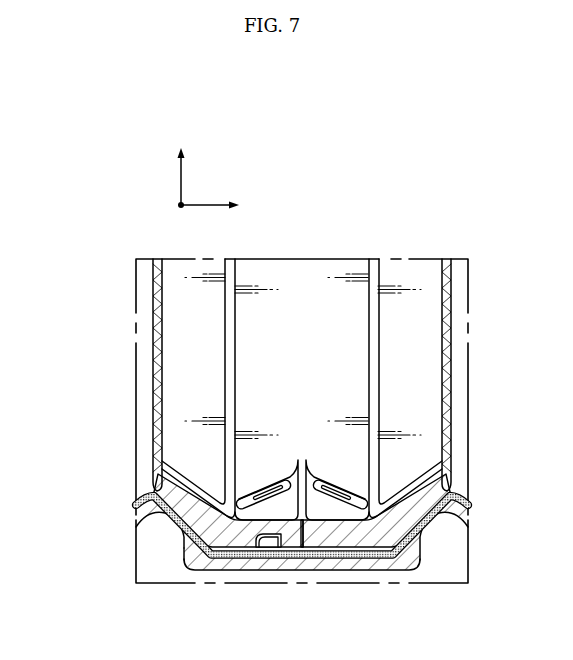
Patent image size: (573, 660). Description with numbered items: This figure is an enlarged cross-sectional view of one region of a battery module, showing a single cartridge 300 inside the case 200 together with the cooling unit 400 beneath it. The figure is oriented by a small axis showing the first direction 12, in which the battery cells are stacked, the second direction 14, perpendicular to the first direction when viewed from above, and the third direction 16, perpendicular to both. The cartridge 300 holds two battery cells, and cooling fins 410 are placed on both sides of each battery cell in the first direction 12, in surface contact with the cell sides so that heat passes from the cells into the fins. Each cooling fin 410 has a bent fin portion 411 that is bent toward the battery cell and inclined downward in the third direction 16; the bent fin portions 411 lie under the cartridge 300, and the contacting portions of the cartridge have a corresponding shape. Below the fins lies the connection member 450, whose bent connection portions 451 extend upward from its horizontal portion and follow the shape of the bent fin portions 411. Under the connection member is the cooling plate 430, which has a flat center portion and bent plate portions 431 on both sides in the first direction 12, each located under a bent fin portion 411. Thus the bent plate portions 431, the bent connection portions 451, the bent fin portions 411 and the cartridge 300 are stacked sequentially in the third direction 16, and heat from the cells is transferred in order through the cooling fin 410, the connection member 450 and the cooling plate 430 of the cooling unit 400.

The first direction 12 is at (223, 205).
The second direction 14 is at (181, 206).
The third direction 16 is at (182, 164).
The case 200 is at (420, 313).
The cartridge 300 is at (433, 482).
The cooling unit 400 is at (245, 551).
The cooling fin 410 is at (152, 467).
The bent fin portion 411 is at (162, 517).
The cooling plate 430 is at (325, 566).
The bent plate portion 431 is at (183, 566).
The connection member 450 is at (380, 556).
The bent connection portion 451 is at (420, 559).